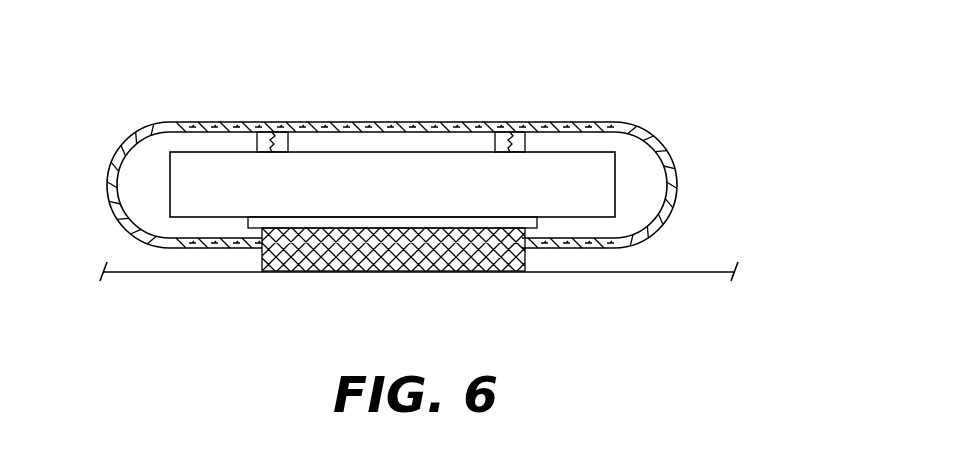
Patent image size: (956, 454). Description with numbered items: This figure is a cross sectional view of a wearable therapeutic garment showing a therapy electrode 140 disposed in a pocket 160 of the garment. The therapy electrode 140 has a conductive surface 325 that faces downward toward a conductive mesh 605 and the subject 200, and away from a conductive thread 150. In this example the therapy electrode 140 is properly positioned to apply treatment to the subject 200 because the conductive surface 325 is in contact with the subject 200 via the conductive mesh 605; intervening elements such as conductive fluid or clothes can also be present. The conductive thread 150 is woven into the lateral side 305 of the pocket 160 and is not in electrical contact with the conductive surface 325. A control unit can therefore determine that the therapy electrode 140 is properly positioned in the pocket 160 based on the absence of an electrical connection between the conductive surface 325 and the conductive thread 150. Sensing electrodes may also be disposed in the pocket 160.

The pocket 160 is at (147, 126).
The therapy electrode 140 is at (590, 152).
The conductive thread 150 is at (272, 130).
The lateral side 305 is at (582, 145).
The conductive surface 325 is at (250, 232).
The conductive mesh 605 is at (524, 268).
The subject 200 is at (677, 272).